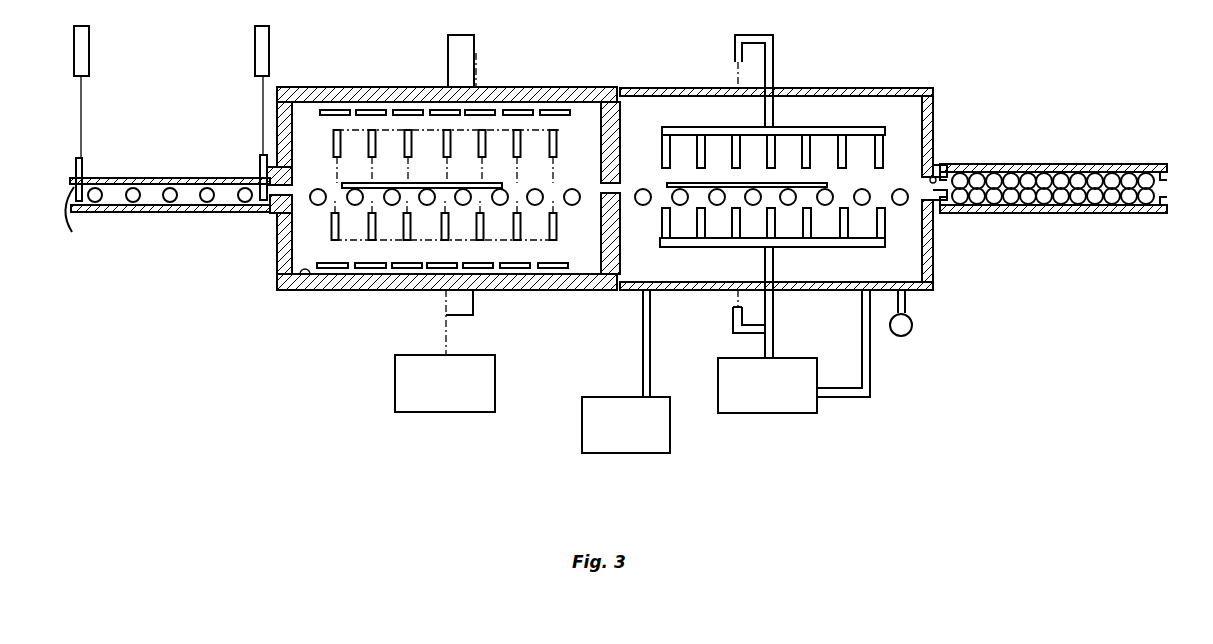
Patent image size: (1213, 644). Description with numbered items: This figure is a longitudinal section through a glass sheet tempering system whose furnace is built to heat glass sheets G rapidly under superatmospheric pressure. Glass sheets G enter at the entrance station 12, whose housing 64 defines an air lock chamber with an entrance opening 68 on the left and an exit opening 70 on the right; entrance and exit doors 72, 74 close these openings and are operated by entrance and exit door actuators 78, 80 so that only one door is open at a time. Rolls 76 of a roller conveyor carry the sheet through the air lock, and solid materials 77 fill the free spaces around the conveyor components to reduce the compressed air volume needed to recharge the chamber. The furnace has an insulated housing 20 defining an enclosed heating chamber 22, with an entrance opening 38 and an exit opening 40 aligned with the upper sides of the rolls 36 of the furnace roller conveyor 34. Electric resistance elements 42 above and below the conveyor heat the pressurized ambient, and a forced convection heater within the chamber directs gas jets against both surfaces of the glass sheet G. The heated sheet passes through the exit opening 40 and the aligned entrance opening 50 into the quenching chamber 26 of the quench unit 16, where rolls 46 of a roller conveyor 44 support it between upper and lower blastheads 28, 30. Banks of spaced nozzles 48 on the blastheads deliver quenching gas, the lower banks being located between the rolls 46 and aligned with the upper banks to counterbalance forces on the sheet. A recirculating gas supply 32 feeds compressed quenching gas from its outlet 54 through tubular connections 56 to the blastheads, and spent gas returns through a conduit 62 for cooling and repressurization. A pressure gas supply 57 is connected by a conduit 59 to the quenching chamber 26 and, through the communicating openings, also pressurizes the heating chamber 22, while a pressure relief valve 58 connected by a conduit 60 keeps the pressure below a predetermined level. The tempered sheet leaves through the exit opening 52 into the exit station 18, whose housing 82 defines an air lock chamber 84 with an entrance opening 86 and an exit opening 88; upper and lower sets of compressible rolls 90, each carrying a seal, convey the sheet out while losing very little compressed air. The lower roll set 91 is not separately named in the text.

The entrance station 12 is at (158, 160).
The quench unit 16 is at (797, 68).
The exit station 18 is at (1058, 140).
The insulated housing 20 is at (330, 87).
The heating chamber 22 is at (305, 274).
The quenching chamber 26 is at (778, 159).
The upper blasthead 28 is at (892, 118).
The lower blasthead 30 is at (929, 254).
The recirculating gas supply 32 is at (740, 385).
The roller conveyor 34 is at (258, 157).
The rolls 36 is at (427, 205).
The entrance opening 38 is at (273, 211).
The exit opening 40 is at (563, 203).
The electric resistance elements 42 is at (500, 142).
The roller conveyor 44 is at (636, 183).
The rolls 46 is at (683, 183).
The banks of spaced nozzles 48 is at (705, 143).
The entrance opening 50 is at (637, 193).
The exit opening 52 is at (933, 200).
The outlet 54 is at (773, 338).
The tubular connections 56 is at (741, 35).
The pressure gas supply 57 is at (582, 423).
The pressure relief valve 58 is at (912, 325).
The conduit 59 is at (643, 333).
The conduit 60 is at (905, 307).
The conduit 62 is at (872, 377).
The housing 64 is at (117, 183).
The entrance opening 68 is at (80, 221).
The exit opening 70 is at (257, 178).
The entrance door 72 is at (82, 163).
The exit door 74 is at (233, 211).
The rolls 76 is at (125, 212).
The solid materials 77 is at (150, 198).
The entrance door actuator 78 is at (89, 52).
The exit door actuator 80 is at (270, 38).
The housing 82 is at (1113, 138).
The air lock chamber 84 is at (1105, 202).
The entrance opening 86 is at (933, 167).
The exit opening 88 is at (1167, 183).
The compressible rolls 90 is at (993, 190).
The lower balls 91 is at (1048, 205).
The glass sheet G is at (386, 183).